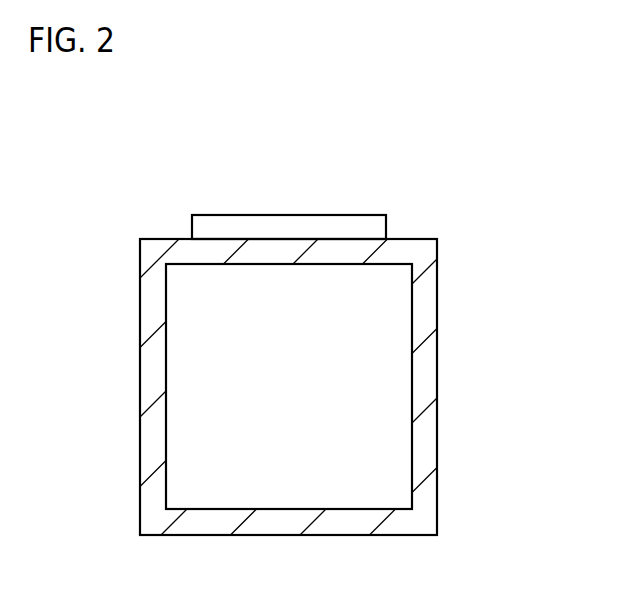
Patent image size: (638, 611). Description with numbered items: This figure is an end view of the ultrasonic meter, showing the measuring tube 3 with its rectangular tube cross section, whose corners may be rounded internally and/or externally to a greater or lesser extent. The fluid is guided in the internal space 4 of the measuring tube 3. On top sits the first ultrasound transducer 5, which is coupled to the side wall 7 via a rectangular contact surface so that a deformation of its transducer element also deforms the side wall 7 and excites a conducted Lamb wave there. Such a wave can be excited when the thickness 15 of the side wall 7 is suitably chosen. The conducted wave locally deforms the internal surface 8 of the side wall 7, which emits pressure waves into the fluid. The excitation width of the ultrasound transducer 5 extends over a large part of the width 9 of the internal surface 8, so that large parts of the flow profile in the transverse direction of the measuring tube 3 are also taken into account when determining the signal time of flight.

The measuring tube 3 is at (483, 275).
The internal space 4 is at (392, 382).
The first ultrasound transducer 5 is at (293, 215).
The side wall 7 is at (187, 258).
The internal surface 8 is at (213, 273).
The width 9 is at (409, 270).
The thickness 15 is at (130, 240).